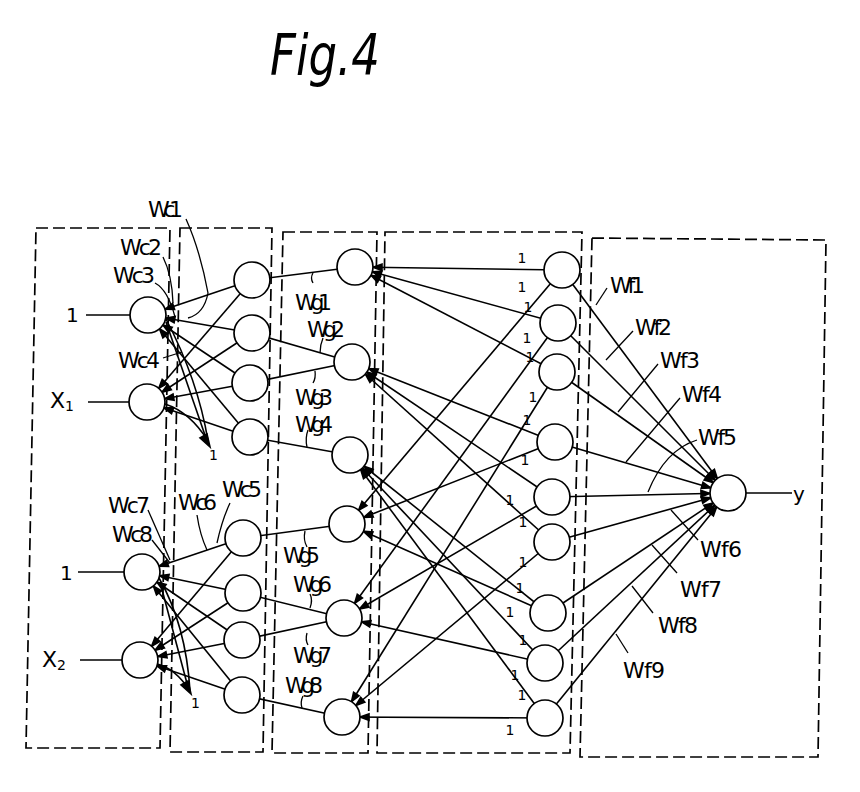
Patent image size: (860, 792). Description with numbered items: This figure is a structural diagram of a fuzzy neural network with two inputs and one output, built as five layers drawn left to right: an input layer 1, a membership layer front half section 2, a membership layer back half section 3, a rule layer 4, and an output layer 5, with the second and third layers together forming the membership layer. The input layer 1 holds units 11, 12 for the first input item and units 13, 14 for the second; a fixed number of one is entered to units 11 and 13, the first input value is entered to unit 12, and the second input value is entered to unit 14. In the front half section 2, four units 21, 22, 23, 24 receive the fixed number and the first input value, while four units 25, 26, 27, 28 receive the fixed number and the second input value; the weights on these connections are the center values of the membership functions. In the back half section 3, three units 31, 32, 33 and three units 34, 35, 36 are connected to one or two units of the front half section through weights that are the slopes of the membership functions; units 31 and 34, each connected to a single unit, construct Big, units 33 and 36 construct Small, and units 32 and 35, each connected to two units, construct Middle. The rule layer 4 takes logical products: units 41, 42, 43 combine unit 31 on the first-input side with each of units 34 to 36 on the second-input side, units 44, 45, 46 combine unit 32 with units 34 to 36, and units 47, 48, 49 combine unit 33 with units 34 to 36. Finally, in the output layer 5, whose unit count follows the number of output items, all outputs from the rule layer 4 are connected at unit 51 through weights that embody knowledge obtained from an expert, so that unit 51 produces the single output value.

The input layer 1 is at (63, 228).
The membership layer front half section 2 is at (233, 228).
The membership layer back half section 3 is at (339, 232).
The rule layer 4 is at (470, 232).
The output layer 5 is at (622, 238).
The unit 11 is at (148, 315).
The unit 12 is at (147, 402).
The unit 13 is at (142, 572).
The unit 14 is at (140, 660).
The unit 21 is at (252, 280).
The unit 22 is at (252, 333).
The unit 23 is at (250, 383).
The unit 24 is at (250, 437).
The unit 25 is at (243, 538).
The unit 26 is at (243, 593).
The unit 27 is at (242, 640).
The unit 28 is at (242, 695).
The unit 31 is at (355, 267).
The unit 32 is at (352, 362).
The unit 33 is at (350, 455).
The unit 34 is at (347, 524).
The unit 35 is at (344, 618).
The unit 36 is at (342, 717).
The unit 41 is at (562, 270).
The unit 42 is at (558, 323).
The unit 43 is at (557, 372).
The unit 44 is at (555, 442).
The unit 45 is at (552, 497).
The unit 46 is at (552, 542).
The unit 47 is at (548, 613).
The unit 48 is at (545, 663).
The unit 49 is at (545, 718).
The unit 51 is at (728, 493).